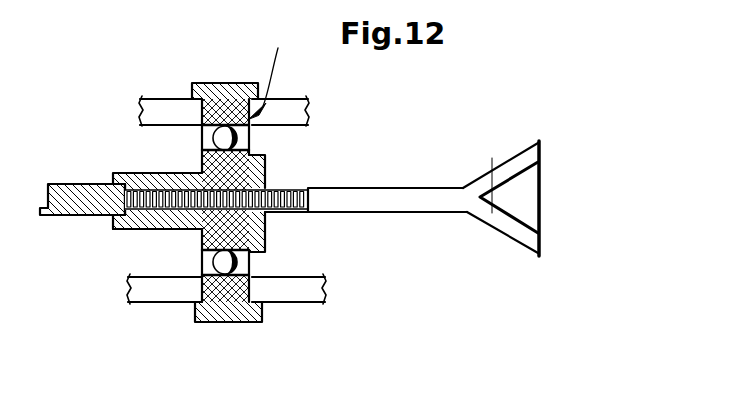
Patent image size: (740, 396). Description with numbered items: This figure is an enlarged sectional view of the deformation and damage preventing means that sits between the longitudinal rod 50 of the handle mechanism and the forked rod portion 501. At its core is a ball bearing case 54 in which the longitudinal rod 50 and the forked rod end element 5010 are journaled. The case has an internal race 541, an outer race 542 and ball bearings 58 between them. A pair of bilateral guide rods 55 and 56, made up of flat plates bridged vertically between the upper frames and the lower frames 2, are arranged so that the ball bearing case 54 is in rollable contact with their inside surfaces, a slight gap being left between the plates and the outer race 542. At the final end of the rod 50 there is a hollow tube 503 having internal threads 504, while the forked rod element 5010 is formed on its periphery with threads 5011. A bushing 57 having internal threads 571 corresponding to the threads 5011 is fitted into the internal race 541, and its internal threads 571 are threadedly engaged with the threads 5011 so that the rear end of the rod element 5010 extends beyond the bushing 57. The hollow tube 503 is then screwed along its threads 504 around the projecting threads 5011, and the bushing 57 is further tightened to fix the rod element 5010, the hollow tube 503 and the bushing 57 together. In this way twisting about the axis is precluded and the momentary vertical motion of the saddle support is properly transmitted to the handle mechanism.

The lower frame 2 is at (290, 100).
The longitudinal rod 50 is at (77, 217).
The ball bearing case 54 is at (276, 78).
The guide rod 55 is at (229, 322).
The guide rod 56 is at (203, 84).
The bushing 57 is at (264, 226).
The ball bearings 58 is at (218, 134).
The forked rod portion 501 is at (500, 164).
The hollow tube 503 is at (114, 174).
The internal threads 504 is at (122, 229).
The internal race 541 is at (206, 167).
The outer race 542 is at (214, 110).
The internal threads 571 is at (265, 170).
The forked rod end element 5010 is at (316, 191).
The threads 5011 is at (266, 206).